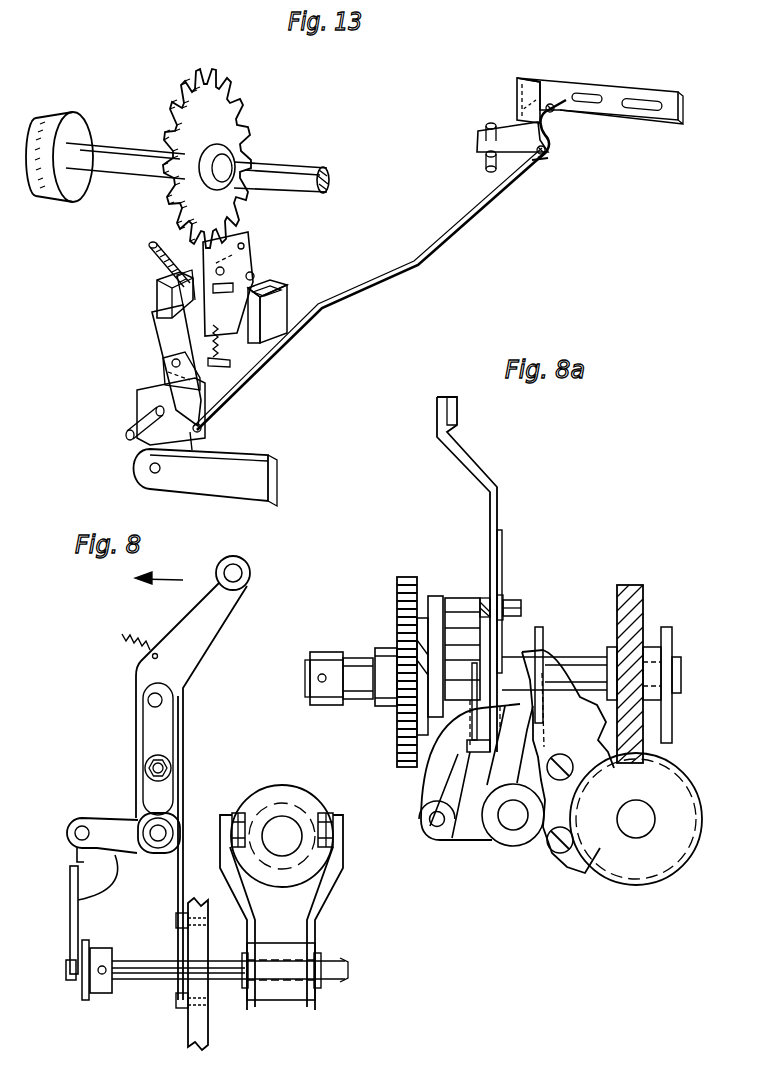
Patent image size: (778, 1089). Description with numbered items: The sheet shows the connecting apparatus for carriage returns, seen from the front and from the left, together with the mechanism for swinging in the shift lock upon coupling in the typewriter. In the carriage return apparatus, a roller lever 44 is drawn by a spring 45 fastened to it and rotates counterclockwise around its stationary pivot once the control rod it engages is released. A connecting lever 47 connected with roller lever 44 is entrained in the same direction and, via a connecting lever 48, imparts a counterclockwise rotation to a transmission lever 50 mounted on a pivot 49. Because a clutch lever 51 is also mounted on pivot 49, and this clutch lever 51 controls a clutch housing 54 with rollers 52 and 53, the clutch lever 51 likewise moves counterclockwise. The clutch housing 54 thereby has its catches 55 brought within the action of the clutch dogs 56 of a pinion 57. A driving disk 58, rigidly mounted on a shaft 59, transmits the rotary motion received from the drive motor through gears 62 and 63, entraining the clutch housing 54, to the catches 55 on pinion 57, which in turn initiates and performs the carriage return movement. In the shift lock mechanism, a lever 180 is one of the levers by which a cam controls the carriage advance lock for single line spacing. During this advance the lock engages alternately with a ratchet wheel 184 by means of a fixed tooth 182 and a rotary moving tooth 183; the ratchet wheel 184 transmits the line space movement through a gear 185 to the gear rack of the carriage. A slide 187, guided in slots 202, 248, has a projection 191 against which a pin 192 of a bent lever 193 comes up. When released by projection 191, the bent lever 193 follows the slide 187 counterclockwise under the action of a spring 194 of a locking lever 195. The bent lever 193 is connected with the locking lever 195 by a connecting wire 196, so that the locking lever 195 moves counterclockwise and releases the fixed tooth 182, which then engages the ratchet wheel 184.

In FIG. 13, the ratchet wheel 184 is at (230, 127).
In FIG. 13, the gear 185 is at (72, 190).
In FIG. 13, the spring 194 is at (157, 260).
In FIG. 13, the rotary moving tooth 183 is at (157, 300).
In FIG. 13, the fixed tooth 182 is at (220, 310).
In FIG. 13, the locking lever 195 is at (167, 345).
In FIG. 13, the lever 180 is at (250, 477).
In FIG. 13, the connecting wire 196 is at (473, 212).
In FIG. 13, the bent lever 193 is at (512, 133).
In FIG. 13, the slide 187 is at (527, 92).
In FIG. 13, the projection 191 is at (536, 122).
In FIG. 13, the pin 192 is at (558, 112).
In FIG. 13, the slot 202 is at (576, 97).
In FIG. 13, the slot 248 is at (642, 101).
In FIG. 8A, the roller lever 44 is at (463, 452).
In FIG. 8, the roller lever 44 is at (187, 668).
In FIG. 8, the spring 45 is at (122, 641).
In FIG. 8, the connecting lever 47 is at (118, 812).
In FIG. 8A, the connecting lever 48 is at (437, 780).
In FIG. 8, the connecting lever 48 is at (74, 982).
In FIG. 8A, the pivot 49 is at (513, 815).
In FIG. 8, the pivot 49 is at (138, 982).
In FIG. 8A, the transmission lever 50 is at (460, 822).
In FIG. 8, the transmission lever 50 is at (101, 986).
In FIG. 8A, the clutch lever 51 is at (507, 730).
In FIG. 8, the clutch lever 51 is at (273, 990).
In FIG. 8, the roller 52 is at (236, 815).
In FIG. 8A, the roller 53 is at (520, 650).
In FIG. 8, the roller 53 is at (328, 815).
In FIG. 8A, the clutch housing 54 is at (458, 605).
In FIG. 8, the clutch housing 54 is at (273, 795).
In FIG. 8A, the catch 55 is at (400, 643).
In FIG. 8A, the clutch dog 56 is at (397, 603).
In FIG. 8A, the pinion 57 is at (405, 613).
In FIG. 8A, the driving disk 58 is at (433, 607).
In FIG. 8A, the shaft 59 is at (572, 652).
In FIG. 8A, the spiral gear 62 is at (612, 845).
In FIG. 8A, the spiral gear 63 is at (627, 610).